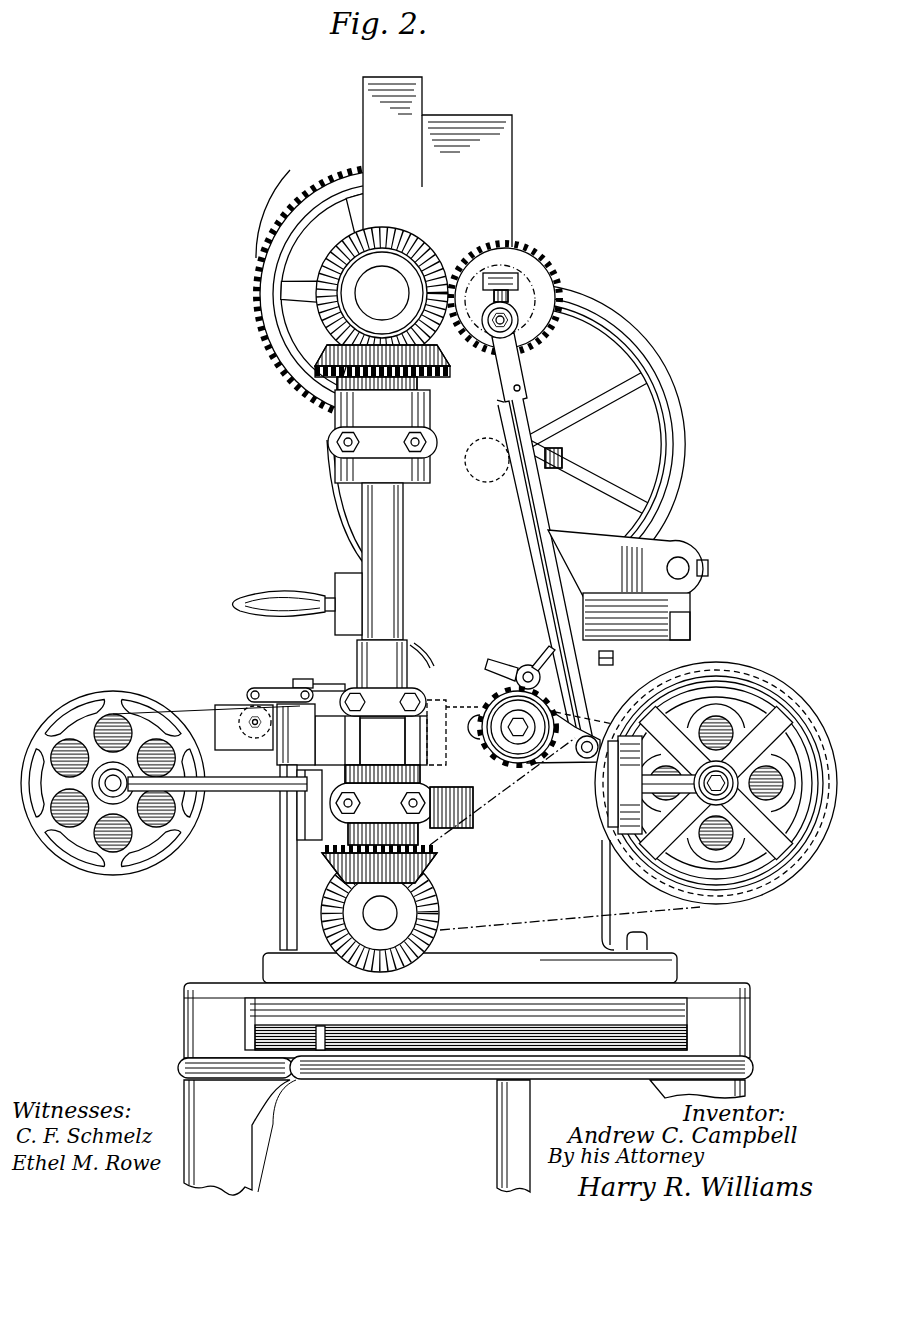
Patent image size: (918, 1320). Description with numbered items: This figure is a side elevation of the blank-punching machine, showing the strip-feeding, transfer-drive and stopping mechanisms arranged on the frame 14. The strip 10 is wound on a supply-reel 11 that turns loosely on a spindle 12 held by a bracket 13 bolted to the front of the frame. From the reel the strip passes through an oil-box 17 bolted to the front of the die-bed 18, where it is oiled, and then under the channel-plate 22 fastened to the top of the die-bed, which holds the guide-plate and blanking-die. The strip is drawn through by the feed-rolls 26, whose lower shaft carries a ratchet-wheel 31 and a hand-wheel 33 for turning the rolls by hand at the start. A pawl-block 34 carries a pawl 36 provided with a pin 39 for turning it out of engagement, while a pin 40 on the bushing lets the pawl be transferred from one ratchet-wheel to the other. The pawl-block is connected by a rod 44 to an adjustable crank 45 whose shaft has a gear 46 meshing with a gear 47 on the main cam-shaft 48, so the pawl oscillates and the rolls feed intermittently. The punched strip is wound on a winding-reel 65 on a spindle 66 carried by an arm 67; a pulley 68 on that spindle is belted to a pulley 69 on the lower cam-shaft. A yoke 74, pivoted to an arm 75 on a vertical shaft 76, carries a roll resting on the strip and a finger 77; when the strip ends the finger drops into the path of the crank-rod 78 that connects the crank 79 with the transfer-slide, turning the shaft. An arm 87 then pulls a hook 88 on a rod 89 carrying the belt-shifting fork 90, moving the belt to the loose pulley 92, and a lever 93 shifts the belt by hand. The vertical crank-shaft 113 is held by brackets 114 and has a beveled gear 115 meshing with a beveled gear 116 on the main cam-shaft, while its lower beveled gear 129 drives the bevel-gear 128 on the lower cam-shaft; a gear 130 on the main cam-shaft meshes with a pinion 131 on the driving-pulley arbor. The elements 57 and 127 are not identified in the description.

The strip 10 is at (200, 709).
The supply-reel 11 is at (113, 796).
The spindle 12 is at (113, 783).
The bracket 13 is at (255, 790).
The frame 14 is at (300, 836).
The oil-box 17 is at (244, 727).
The die-bed 18 is at (352, 734).
The channel-plate 22 is at (438, 700).
The feed-rolls 26 is at (488, 665).
The ratchet-wheel 31 is at (530, 778).
The hand-wheel 33 is at (480, 712).
The pawl-block 34 is at (525, 663).
The pawl 36 is at (556, 655).
The pin 39 is at (533, 665).
The pin 40 is at (500, 660).
The rod 44 is at (540, 522).
The adjustable crank 45 is at (520, 312).
The gear 46 is at (562, 260).
The gear 47 is at (385, 305).
The main cam-shaft 48 is at (382, 293).
The bevel gear 57 is at (405, 916).
The winding-reel 65 is at (716, 795).
The spindle 66 is at (721, 775).
The arm 67 is at (665, 770).
The pulley 68 is at (690, 912).
The pulley 69 is at (453, 922).
The yoke 74 is at (300, 680).
The arm 75 is at (257, 690).
The vertical shaft 76 is at (280, 880).
The finger 77 is at (330, 684).
The crank-rod 78 is at (383, 702).
The crank 79 is at (382, 741).
The arm 87 is at (690, 630).
The hook 88 is at (668, 650).
The rod 89 is at (690, 563).
The belt-shifting fork 90 is at (575, 425).
The loose pulley 92 is at (624, 474).
The lever 93 is at (315, 600).
The crank-shaft 113 is at (402, 565).
The brackets 114 is at (382, 625).
The beveled gear 115 is at (330, 400).
The beveled gear 116 is at (270, 340).
The leg 127 is at (495, 1118).
The bevel-gear 128 is at (428, 960).
The beveled gear 129 is at (330, 870).
The gear 130 is at (286, 214).
The pinion 131 is at (540, 427).